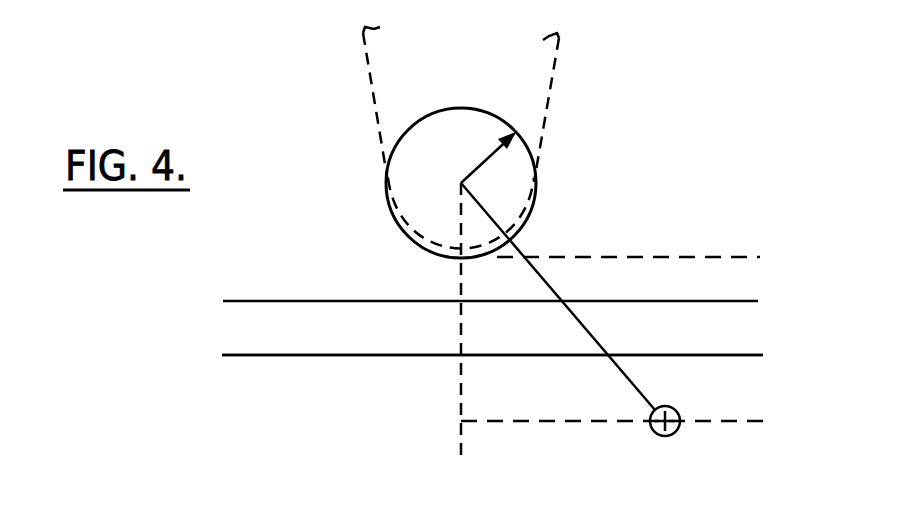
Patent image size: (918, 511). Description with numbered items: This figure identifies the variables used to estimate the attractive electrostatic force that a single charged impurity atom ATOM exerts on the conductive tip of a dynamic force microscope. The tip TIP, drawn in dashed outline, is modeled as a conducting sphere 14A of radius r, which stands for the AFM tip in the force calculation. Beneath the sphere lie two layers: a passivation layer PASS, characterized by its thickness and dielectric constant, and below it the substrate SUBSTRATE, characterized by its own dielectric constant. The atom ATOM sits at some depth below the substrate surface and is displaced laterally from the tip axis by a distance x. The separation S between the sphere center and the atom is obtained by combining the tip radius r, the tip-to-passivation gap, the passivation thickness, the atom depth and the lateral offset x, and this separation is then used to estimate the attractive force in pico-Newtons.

The conducting sphere 14A is at (537, 182).
The AFM tip TIP is at (461, 138).
The AFM tip radius r is at (488, 157).
The tip-to-atom separation S is at (638, 272).
The passivation layer PASS is at (245, 319).
The substrate SUBSTRATE is at (245, 385).
The atom ATOM is at (634, 309).
The lateral distance x is at (500, 458).